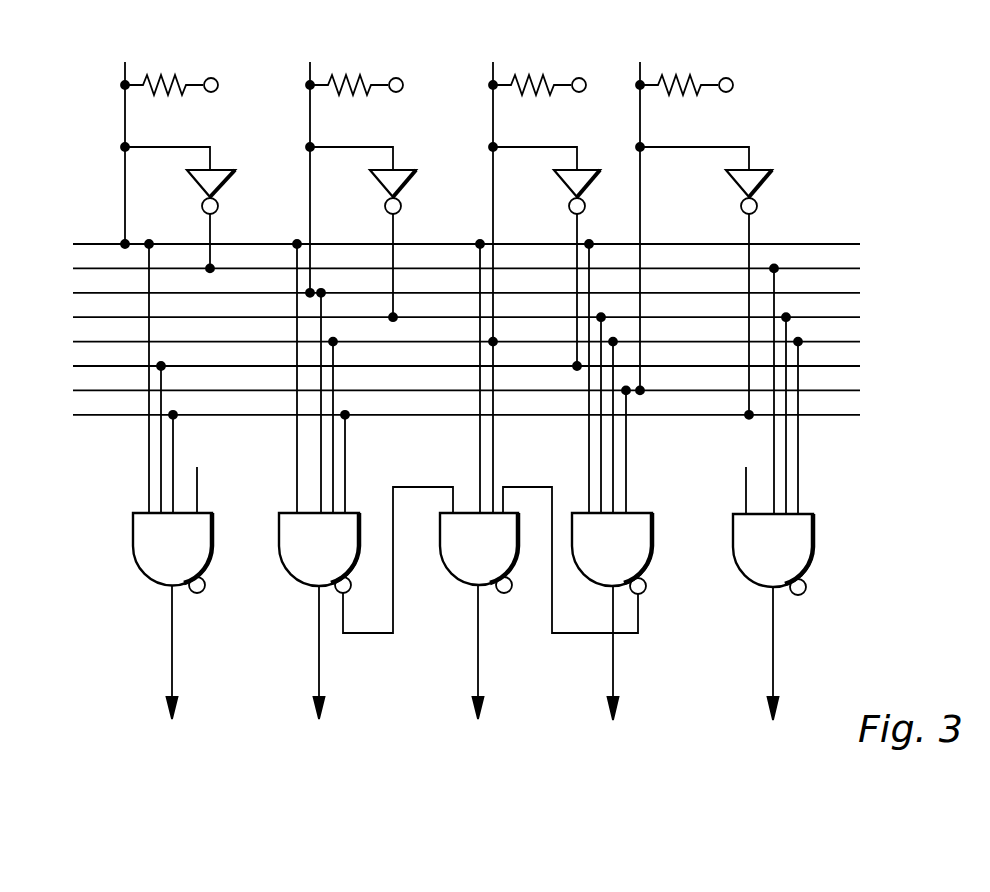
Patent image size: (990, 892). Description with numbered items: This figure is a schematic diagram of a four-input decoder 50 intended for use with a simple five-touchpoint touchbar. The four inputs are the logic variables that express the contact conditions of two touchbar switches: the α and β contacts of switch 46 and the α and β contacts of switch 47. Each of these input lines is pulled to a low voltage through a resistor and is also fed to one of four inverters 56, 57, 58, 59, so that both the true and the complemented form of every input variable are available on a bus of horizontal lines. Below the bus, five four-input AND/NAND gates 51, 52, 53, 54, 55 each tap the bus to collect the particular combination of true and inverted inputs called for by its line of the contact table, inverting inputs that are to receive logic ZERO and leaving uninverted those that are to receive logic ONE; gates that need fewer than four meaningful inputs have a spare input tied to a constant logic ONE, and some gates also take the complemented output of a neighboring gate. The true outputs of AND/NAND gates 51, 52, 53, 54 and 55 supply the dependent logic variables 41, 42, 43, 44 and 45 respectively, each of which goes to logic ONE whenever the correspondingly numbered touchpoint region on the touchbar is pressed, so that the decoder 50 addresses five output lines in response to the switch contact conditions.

The dependent logic variable 41 is at (170, 667).
The dependent logic variable 42 is at (319, 667).
The dependent logic variable 43 is at (478, 667).
The dependent logic variable 44 is at (613, 667).
The dependent logic variable 45 is at (772, 668).
The switch 46 is at (269, 158).
The switch 47 is at (621, 266).
The decoder 50 is at (848, 491).
The AND/NAND gate 51 is at (138, 558).
The AND/NAND gate 52 is at (285, 558).
The AND/NAND gate 53 is at (453, 580).
The AND/NAND gate 54 is at (654, 550).
The AND/NAND gate 55 is at (814, 544).
The inverter 56 is at (230, 180).
The inverter 57 is at (410, 182).
The inverter 58 is at (565, 183).
The inverter 59 is at (768, 183).